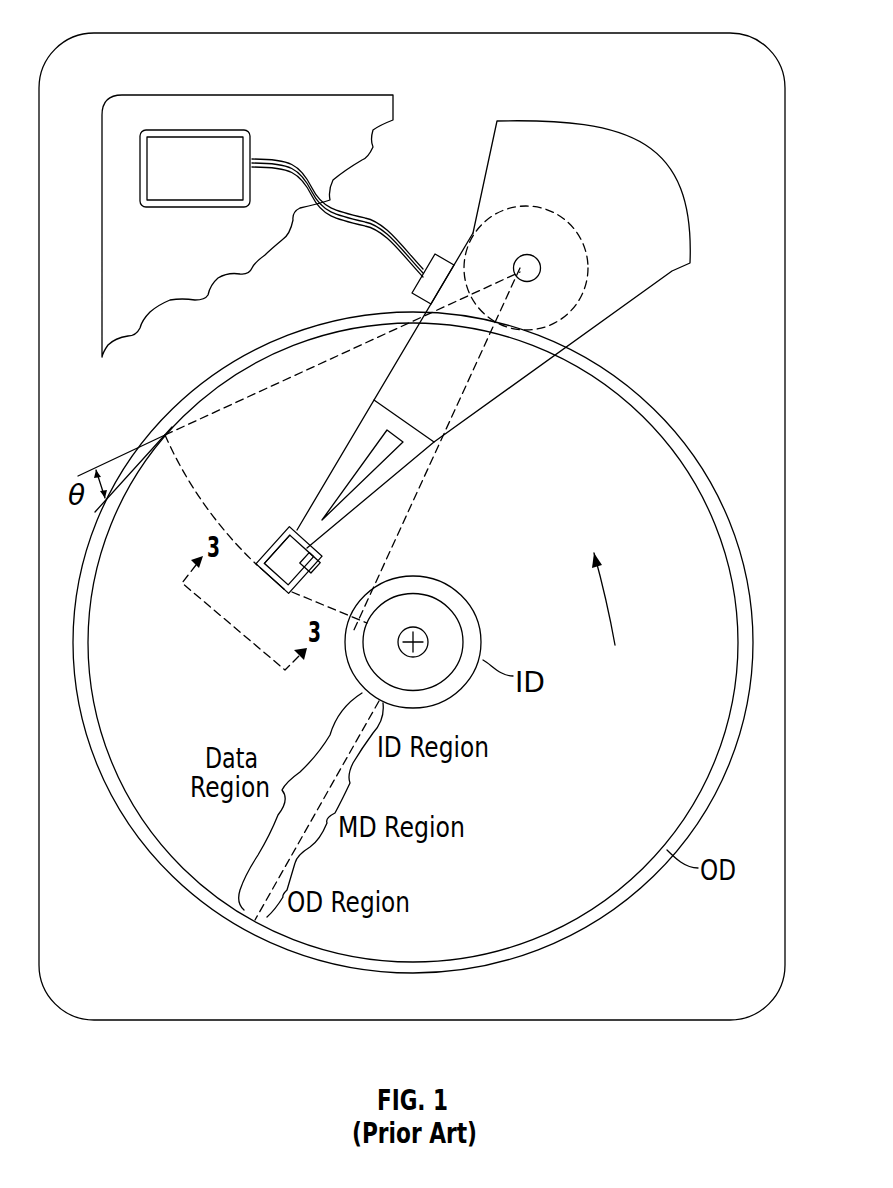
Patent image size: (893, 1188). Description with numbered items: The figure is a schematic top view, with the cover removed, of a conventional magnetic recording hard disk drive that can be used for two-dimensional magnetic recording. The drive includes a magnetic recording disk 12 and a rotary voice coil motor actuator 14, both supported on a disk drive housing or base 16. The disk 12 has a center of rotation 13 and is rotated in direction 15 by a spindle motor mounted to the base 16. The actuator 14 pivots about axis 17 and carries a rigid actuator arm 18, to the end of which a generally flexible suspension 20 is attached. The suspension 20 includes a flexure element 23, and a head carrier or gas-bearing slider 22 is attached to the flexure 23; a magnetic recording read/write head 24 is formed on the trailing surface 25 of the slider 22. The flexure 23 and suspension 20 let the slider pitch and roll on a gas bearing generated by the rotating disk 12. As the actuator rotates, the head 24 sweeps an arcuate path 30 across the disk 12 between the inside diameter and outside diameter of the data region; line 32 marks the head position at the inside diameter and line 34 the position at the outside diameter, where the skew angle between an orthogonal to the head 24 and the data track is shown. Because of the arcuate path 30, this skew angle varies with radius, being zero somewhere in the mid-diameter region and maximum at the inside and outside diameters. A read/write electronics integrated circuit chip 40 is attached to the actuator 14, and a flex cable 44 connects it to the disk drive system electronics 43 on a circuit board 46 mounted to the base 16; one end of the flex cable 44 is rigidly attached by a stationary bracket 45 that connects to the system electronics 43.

The magnetic recording disk 12 is at (518, 868).
The center of rotation 13 is at (455, 623).
The rotary voice coil motor (VCM) actuator 14 is at (628, 142).
The direction of rotation 15 is at (614, 610).
The disk drive housing or base 16 is at (668, 33).
The pivot axis 17 is at (520, 268).
The rigid actuator arm 18 is at (400, 388).
The suspension 20 is at (365, 440).
The gas-bearing slider 22 is at (285, 532).
The flexure element 23 is at (316, 558).
The magnetic recording read/write head 24 is at (297, 594).
The trailing surface 25 is at (266, 576).
The arcuate path 30 is at (205, 503).
The line representing head position at ID 32 is at (347, 633).
The line representing head position at OD 34 is at (167, 438).
The read/write electronics integrated circuit (R/W IC) chip 40 is at (428, 290).
The disk drive system electronics 43 is at (165, 162).
The flex cable 44 is at (355, 213).
The stationary bracket 45 is at (140, 152).
The circuit board 46 is at (222, 112).